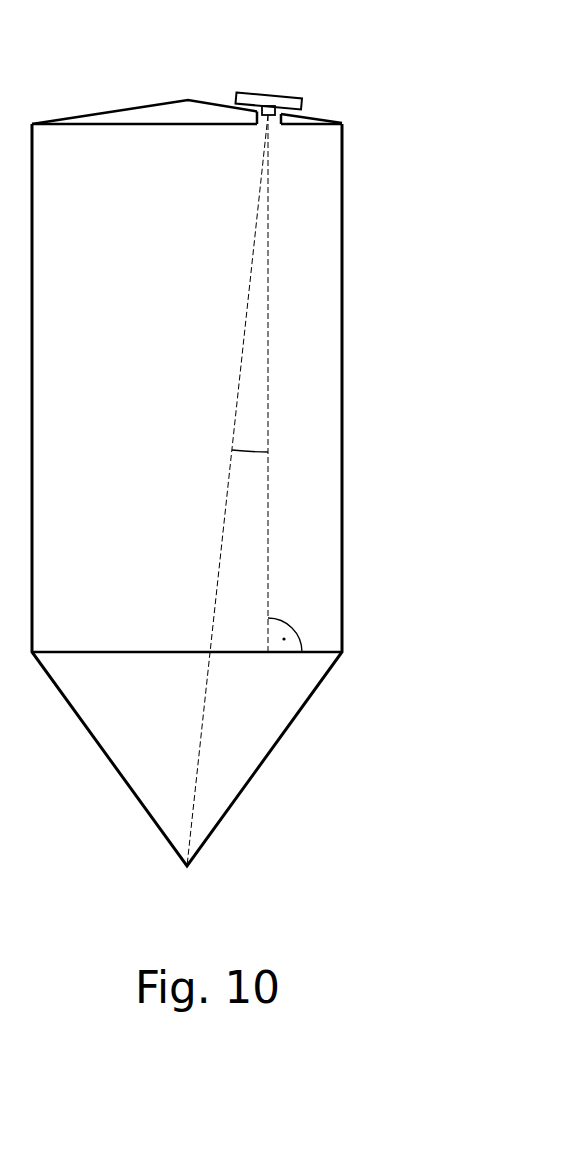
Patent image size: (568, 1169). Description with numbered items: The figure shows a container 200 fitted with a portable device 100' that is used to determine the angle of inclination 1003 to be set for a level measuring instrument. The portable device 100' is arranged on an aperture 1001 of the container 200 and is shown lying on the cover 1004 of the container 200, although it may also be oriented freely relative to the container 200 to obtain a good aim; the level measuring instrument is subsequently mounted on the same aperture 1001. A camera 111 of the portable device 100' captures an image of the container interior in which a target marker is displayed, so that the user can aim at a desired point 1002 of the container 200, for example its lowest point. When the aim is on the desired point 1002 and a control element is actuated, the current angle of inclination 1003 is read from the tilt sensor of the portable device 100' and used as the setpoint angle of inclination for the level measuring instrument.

The container 200 is at (342, 363).
The cover 1004 is at (118, 110).
The aperture 1001 is at (254, 133).
The portable device 100' is at (287, 64).
The camera 111 is at (272, 115).
The angle of inclination 1003 is at (252, 453).
The desired point 1002 is at (187, 866).